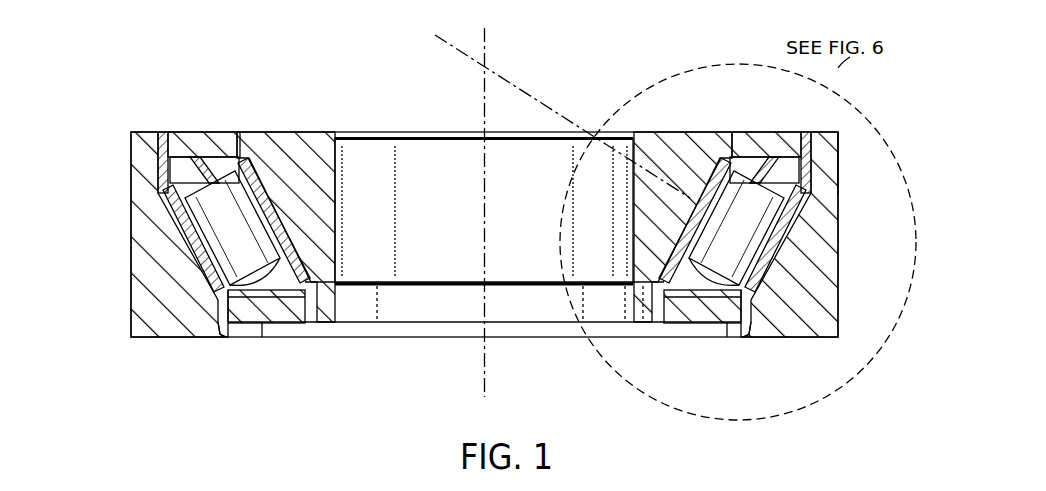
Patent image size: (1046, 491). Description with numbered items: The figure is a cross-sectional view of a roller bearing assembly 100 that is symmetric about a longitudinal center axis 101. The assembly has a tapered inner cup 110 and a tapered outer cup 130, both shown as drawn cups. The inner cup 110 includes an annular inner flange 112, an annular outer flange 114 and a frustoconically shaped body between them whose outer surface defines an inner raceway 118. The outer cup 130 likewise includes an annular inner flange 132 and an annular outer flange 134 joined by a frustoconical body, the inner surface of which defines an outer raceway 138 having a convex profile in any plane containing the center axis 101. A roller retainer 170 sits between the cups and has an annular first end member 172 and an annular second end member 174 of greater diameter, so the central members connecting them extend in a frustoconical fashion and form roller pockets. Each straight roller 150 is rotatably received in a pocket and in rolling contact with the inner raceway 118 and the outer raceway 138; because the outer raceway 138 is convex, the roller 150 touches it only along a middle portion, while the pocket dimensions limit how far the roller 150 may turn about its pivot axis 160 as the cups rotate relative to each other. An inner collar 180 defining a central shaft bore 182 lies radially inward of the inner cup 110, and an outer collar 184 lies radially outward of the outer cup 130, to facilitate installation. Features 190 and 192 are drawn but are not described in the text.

The roller bearing assembly 100 is at (138, 55).
The longitudinal center axis 101 is at (492, 45).
The tapered inner cup 110 is at (295, 213).
The annular inner flange 112 is at (404, 312).
The annular outer flange 114 is at (248, 155).
The inner raceway 118 is at (700, 240).
The tapered outer cup 130 is at (782, 271).
The annular inner flange 132 is at (762, 310).
The annular outer flange 134 is at (838, 160).
The outer raceway 138 is at (776, 222).
The straight roller 150 is at (684, 290).
The pivot axis 160 is at (470, 60).
The roller retainer 170 is at (185, 171).
The annular first end member 172 is at (285, 278).
The annular second end member 174 is at (220, 158).
The inner collar 180 is at (678, 132).
The central shaft bore 182 is at (440, 160).
The outer collar 184 is at (131, 255).
The notch 190 is at (262, 338).
The seal strip 192 is at (768, 132).